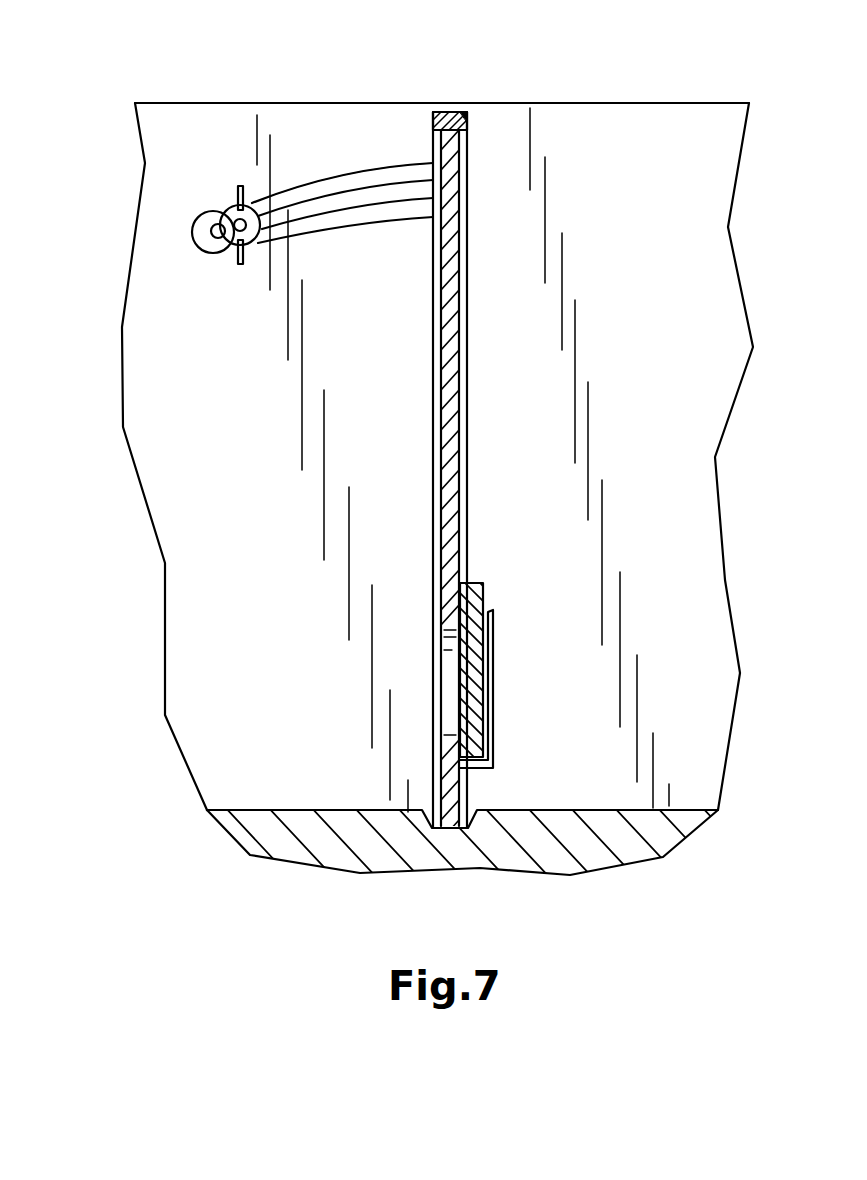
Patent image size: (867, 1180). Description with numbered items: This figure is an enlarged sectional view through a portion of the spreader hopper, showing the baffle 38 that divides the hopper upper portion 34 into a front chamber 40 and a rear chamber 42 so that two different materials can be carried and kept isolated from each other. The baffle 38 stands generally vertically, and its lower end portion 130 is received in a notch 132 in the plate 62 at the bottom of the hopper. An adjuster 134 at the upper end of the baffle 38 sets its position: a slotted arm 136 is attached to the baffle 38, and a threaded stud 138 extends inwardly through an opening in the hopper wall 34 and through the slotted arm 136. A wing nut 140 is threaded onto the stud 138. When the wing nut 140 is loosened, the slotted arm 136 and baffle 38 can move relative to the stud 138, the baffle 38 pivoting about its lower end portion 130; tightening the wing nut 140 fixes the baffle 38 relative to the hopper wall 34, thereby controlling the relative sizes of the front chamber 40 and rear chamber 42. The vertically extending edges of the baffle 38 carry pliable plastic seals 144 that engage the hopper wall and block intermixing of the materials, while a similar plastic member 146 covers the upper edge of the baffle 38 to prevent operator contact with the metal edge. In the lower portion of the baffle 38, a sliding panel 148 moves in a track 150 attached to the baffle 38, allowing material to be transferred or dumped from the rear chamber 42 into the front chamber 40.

The hopper upper portion 34 is at (220, 530).
The baffle 38 is at (447, 400).
The front chamber 40 is at (652, 349).
The rear chamber 42 is at (196, 453).
The plate 62 is at (263, 808).
The lower end portion 130 is at (441, 770).
The notch 132 is at (433, 815).
The adjuster 134 is at (307, 170).
The slotted arm 136 is at (375, 170).
The threaded stud 138 is at (238, 224).
The wing nut 140 is at (228, 244).
The pliable plastic seals 144 is at (433, 575).
The plastic member 146 is at (465, 110).
The sliding panel 148 is at (484, 582).
The track 150 is at (493, 690).